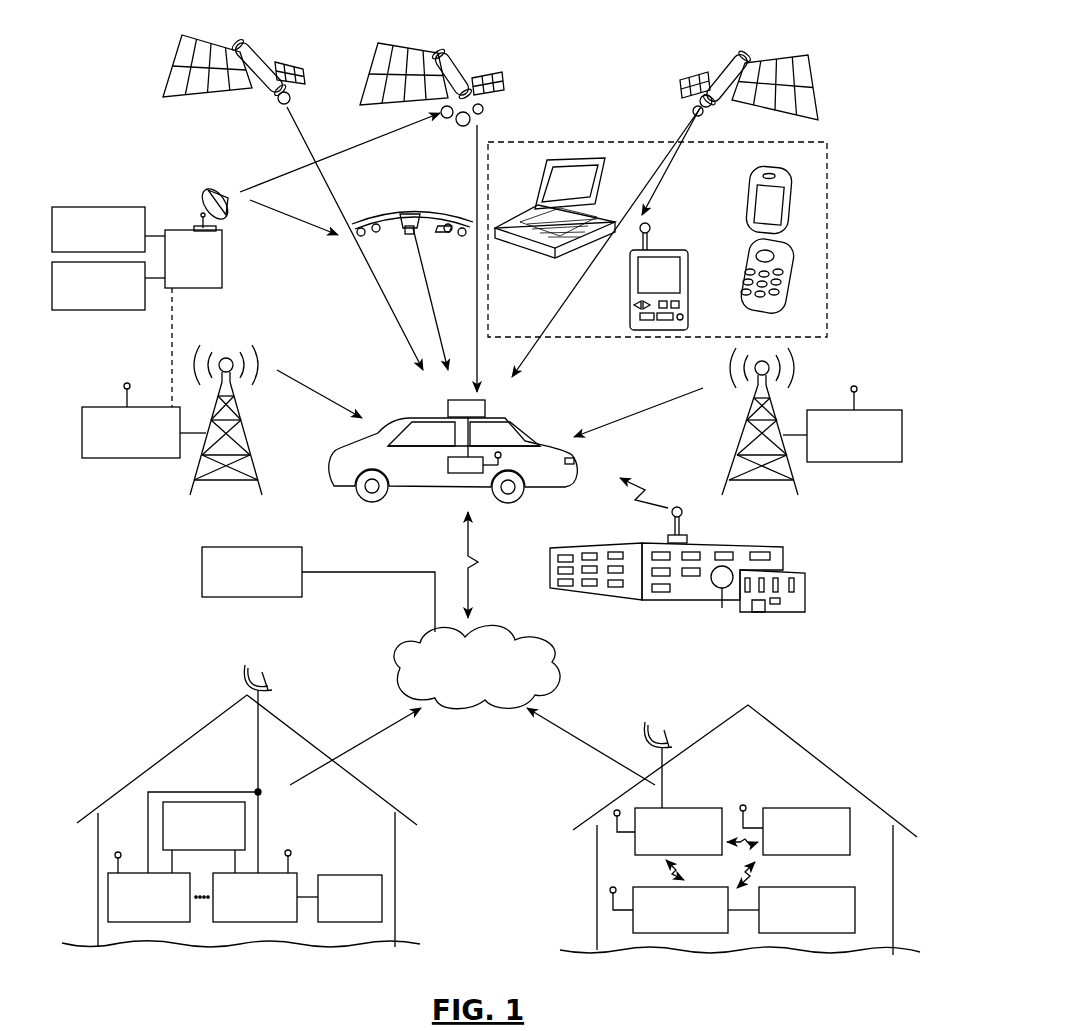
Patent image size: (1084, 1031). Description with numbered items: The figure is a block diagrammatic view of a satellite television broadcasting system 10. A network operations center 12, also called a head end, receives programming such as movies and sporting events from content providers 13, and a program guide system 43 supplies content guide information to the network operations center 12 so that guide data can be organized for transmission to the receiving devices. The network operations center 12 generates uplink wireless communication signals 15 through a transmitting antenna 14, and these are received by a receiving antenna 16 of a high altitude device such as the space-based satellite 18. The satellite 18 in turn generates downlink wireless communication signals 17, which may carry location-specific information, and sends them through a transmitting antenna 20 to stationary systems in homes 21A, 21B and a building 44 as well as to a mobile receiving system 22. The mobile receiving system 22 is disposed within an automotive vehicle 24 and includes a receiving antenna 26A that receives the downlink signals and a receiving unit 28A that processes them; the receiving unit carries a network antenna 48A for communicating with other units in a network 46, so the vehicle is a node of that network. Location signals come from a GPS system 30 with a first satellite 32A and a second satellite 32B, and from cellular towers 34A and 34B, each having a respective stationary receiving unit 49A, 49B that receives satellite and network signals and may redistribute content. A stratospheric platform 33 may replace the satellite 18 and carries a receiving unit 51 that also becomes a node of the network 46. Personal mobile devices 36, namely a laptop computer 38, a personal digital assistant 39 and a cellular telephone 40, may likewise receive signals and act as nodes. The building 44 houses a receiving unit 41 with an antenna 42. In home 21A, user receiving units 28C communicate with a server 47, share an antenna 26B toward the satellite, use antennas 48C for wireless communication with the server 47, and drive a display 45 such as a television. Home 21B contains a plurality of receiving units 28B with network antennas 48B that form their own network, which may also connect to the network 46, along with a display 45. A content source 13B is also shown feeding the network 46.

The satellite television broadcasting system 10 is at (210, 170).
The network operations center 12 is at (222, 258).
The content providers 13 is at (85, 207).
The content source 13B is at (253, 547).
The transmitting antenna 14 is at (232, 216).
The wireless communication signals 15 is at (280, 174).
The receiving antenna 16 is at (450, 120).
The wireless communication signals 17 is at (480, 137).
The satellite 18 is at (465, 68).
The transmitting antenna 20 is at (483, 117).
The home 21A is at (142, 768).
The home 21B is at (795, 738).
The mobile receiving system 22 is at (472, 436).
The automotive vehicle 24 is at (578, 454).
The receiving antenna 26A is at (446, 405).
The antenna 26B is at (270, 695).
The receiving unit 28A is at (460, 473).
The receiving unit 28B is at (850, 830).
The user receiving units 28C is at (128, 922).
The GPS system 30 is at (152, 56).
The first satellite 32A is at (265, 62).
The second satellite 32B is at (712, 54).
The stratospheric platform 33 is at (376, 215).
The cellular tower 34A is at (245, 417).
The cellular tower 34B is at (745, 430).
The personal mobile device 36 is at (828, 170).
The laptop computer 38 is at (525, 248).
The personal digital assistant 39 is at (677, 250).
The cellular telephone 40 is at (748, 222).
The receiving unit 41 is at (670, 534).
The antenna 42 is at (690, 510).
The program guide system 43 is at (83, 310).
The building 44 is at (750, 548).
The display 45 is at (345, 922).
The network 46 is at (405, 644).
The server 47 is at (186, 802).
The network antenna 48A is at (505, 460).
The network antennas 48B is at (612, 834).
The antenna 48C is at (119, 852).
The receiving unit 49A is at (100, 458).
The receiving unit 49B is at (876, 410).
The receiving unit 51 is at (412, 212).